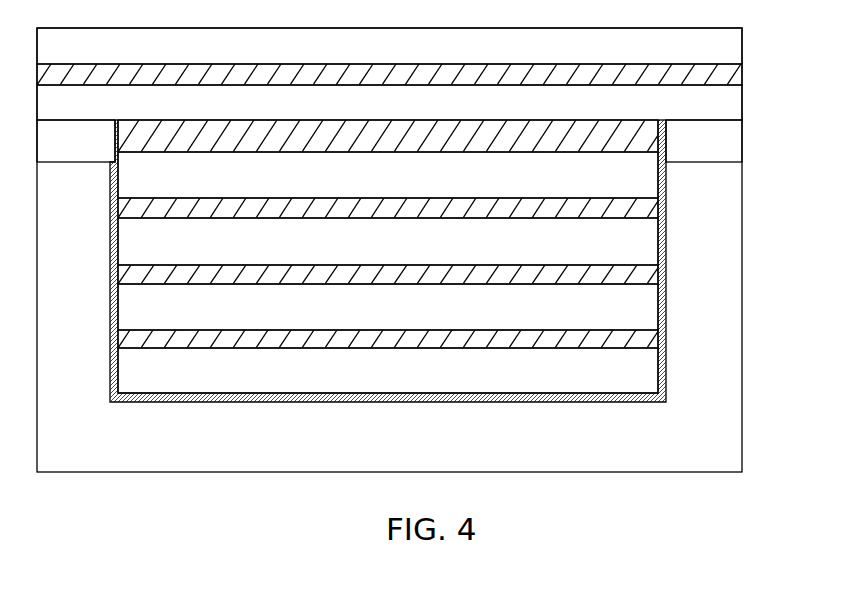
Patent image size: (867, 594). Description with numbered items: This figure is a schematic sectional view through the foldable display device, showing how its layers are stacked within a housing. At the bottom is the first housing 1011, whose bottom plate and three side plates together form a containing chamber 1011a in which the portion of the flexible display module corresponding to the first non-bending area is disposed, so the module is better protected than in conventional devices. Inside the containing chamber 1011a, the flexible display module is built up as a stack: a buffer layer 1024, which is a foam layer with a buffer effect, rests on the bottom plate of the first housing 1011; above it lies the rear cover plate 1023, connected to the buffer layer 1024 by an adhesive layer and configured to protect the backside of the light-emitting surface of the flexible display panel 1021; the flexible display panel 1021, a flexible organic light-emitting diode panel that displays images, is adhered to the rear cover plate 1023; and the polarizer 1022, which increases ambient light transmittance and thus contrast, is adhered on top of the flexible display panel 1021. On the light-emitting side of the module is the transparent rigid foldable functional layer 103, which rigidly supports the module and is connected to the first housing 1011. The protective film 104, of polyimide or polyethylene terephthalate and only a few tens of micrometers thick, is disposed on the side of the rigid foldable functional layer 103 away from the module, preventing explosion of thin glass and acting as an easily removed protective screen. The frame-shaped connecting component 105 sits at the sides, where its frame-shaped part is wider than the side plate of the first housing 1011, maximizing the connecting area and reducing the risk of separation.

The protective film 104 is at (708, 46).
The rigid foldable functional layer 103 is at (710, 96).
The frame-shaped connecting component 105 is at (712, 138).
The polarizer 1022 is at (632, 184).
The flexible display panel 1021 is at (643, 246).
The rear cover plate 1023 is at (635, 306).
The containing chamber 1011a is at (660, 344).
The buffer layer 1024 is at (640, 381).
The first housing 1011 is at (710, 438).